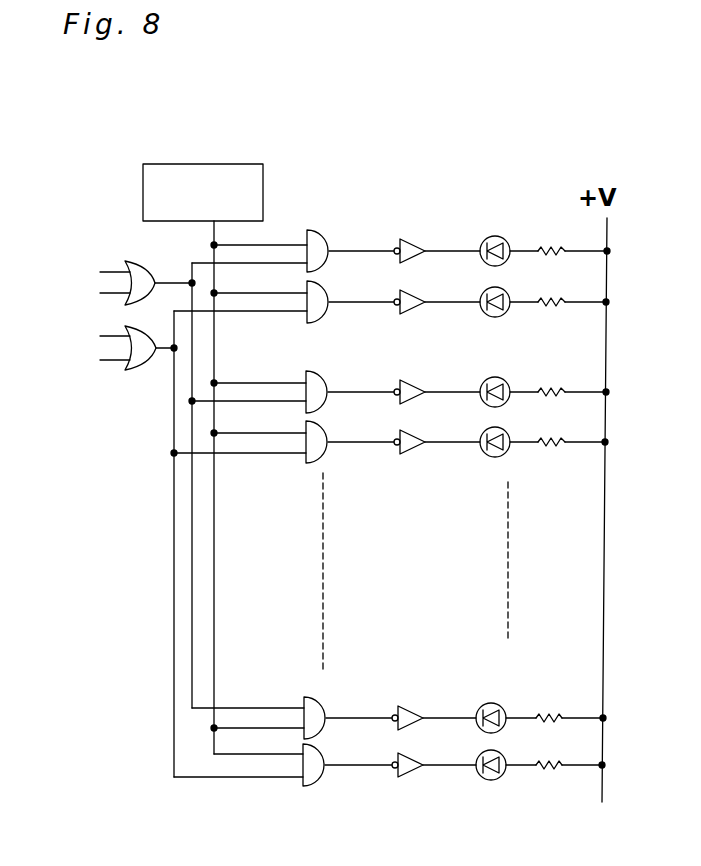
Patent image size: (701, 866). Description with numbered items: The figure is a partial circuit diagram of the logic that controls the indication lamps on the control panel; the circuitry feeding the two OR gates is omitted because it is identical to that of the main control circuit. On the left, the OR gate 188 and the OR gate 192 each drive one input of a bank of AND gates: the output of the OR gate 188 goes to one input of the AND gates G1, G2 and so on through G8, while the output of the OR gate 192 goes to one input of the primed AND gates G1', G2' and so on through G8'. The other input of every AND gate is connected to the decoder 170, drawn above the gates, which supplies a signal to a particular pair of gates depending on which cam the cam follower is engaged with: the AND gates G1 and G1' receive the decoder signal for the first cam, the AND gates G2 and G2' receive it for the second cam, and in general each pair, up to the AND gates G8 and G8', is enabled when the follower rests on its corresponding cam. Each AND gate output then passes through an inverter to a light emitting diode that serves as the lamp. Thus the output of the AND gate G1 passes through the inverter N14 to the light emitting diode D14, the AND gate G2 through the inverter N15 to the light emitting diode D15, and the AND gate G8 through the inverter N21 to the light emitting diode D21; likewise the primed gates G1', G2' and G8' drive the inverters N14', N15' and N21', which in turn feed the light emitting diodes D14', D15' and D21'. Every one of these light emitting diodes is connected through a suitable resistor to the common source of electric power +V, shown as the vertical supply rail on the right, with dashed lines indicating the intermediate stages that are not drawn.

The decoder 170 is at (217, 169).
The OR gate 188 is at (137, 270).
The OR gate 192 is at (138, 366).
The AND gate G1 is at (333, 221).
The AND gate G1' is at (342, 291).
The AND gate G2 is at (339, 374).
The AND gate G2' is at (343, 434).
The AND gate G8 is at (337, 696).
The AND gate G8' is at (338, 794).
The inverter N14 is at (428, 216).
The inverter N14' is at (440, 287).
The inverter N15 is at (438, 369).
The inverter N15' is at (441, 429).
The inverter N21 is at (433, 691).
The inverter N21' is at (436, 799).
The light emitting diode D14 is at (516, 218).
The light emitting diode D14' is at (533, 288).
The light emitting diode D15 is at (529, 371).
The light emitting diode D15' is at (533, 431).
The light emitting diode D21 is at (526, 693).
The light emitting diode D21' is at (530, 797).